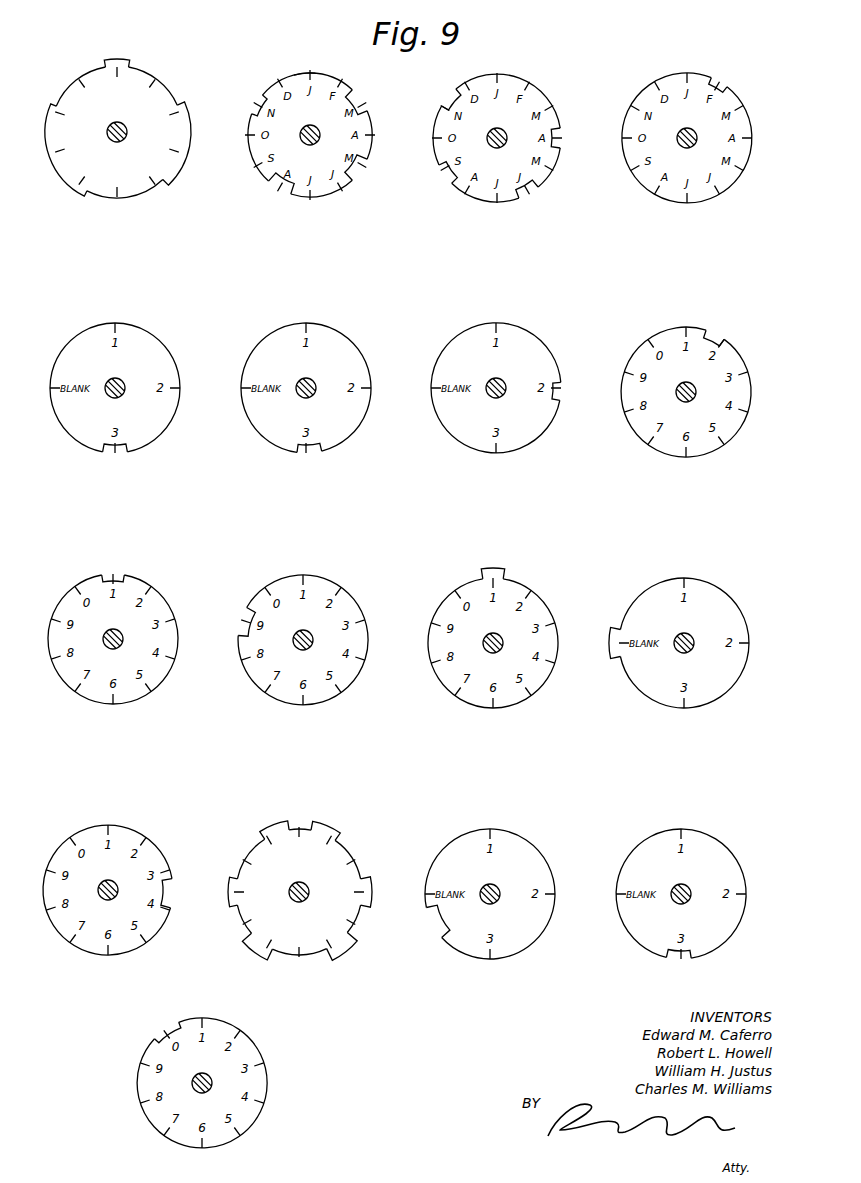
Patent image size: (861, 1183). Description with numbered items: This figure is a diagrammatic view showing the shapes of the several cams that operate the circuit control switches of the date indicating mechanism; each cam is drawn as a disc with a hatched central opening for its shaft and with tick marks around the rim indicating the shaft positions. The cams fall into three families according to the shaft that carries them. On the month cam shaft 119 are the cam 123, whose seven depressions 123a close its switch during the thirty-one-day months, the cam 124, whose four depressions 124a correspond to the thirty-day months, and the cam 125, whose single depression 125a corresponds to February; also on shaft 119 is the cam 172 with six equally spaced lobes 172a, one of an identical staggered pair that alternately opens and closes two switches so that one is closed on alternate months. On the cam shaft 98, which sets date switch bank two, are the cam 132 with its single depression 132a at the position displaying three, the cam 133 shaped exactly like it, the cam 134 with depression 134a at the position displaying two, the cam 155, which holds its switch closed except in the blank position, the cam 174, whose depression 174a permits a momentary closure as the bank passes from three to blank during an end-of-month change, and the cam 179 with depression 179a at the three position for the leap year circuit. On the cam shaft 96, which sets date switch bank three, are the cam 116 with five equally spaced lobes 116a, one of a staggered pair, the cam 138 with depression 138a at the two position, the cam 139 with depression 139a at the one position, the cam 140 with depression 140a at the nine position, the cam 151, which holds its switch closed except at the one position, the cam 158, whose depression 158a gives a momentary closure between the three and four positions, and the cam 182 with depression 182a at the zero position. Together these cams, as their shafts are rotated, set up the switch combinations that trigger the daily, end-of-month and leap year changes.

The cam shaft 96 is at (110, 139).
The cam shaft 98 is at (108, 395).
The cam shaft 119 is at (303, 142).
The cam 116 is at (123, 119).
The lobes 116a is at (125, 65).
The cam 123 is at (313, 134).
The depressions 123a is at (292, 80).
The cam 124 is at (513, 137).
The depressions 124a is at (453, 102).
The cam 125 is at (705, 128).
The depression 125a is at (715, 93).
The cam 132 is at (122, 396).
The depression 132a is at (118, 447).
The cam 133 is at (337, 358).
The cam 134 is at (519, 383).
The depression 134a is at (558, 383).
The cam 138 is at (704, 380).
The depression 138a is at (722, 347).
The cam 139 is at (126, 621).
The depression 139a is at (117, 575).
The cam 140 is at (299, 638).
The depression 140a is at (247, 627).
The cam 151 is at (500, 610).
The cam 155 is at (715, 622).
The cam 158 is at (127, 890).
The depression 158a is at (168, 896).
The cam 172 is at (312, 878).
The lobes 172a is at (322, 827).
The cam 174 is at (500, 898).
The depression 174a is at (445, 932).
The cam 179 is at (695, 908).
The depression 179a is at (677, 953).
The cam 182 is at (199, 1083).
The depression 182a is at (165, 1037).